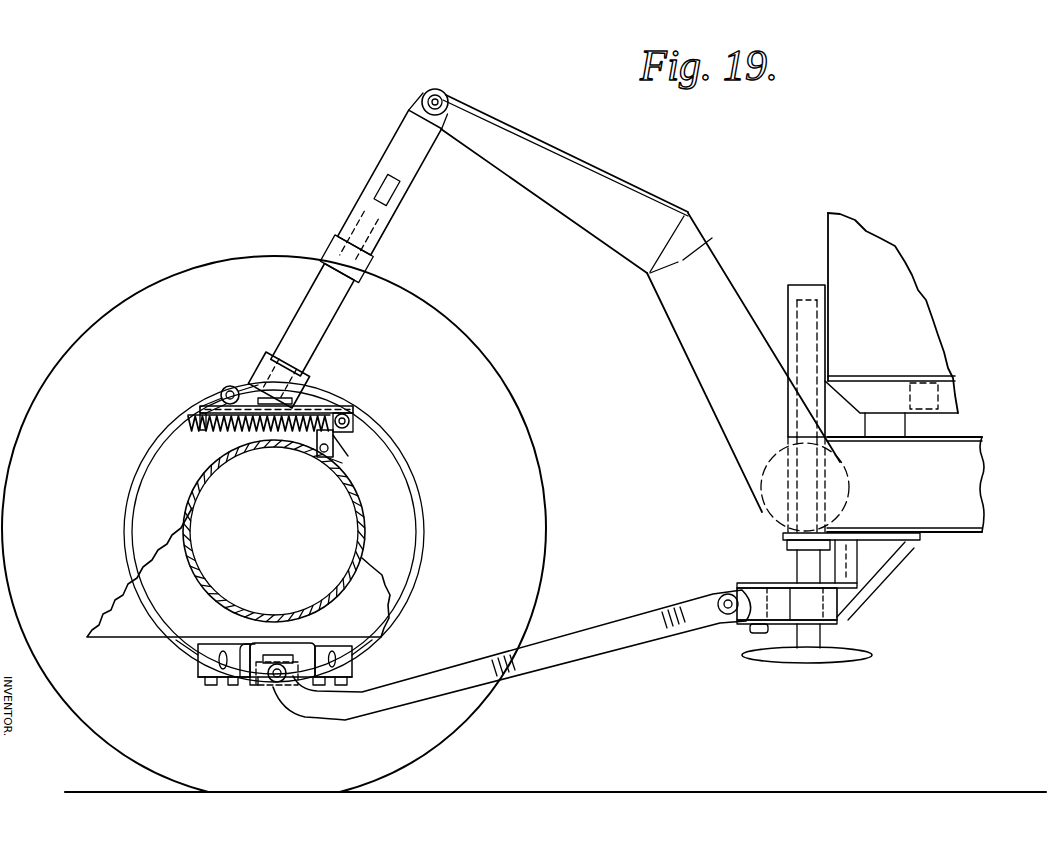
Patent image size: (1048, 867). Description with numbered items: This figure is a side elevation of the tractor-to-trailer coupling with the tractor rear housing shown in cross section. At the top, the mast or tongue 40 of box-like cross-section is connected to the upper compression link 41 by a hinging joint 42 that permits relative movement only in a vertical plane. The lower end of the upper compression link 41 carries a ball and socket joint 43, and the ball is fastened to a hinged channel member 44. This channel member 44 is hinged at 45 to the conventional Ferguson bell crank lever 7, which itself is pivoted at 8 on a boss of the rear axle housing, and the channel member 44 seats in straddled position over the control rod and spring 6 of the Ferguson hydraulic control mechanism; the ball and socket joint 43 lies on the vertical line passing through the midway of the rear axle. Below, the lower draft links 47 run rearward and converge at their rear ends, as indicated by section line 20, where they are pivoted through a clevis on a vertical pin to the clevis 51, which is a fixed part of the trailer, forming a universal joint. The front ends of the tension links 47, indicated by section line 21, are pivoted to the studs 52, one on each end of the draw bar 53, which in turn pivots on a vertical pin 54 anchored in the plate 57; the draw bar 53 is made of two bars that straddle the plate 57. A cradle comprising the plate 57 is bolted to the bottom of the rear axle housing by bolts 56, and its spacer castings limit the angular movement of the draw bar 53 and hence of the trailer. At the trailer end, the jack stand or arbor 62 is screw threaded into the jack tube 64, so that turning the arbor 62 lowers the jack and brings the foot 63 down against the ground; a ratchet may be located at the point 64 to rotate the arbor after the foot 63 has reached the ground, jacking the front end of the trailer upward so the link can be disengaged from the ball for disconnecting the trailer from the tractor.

The spring 6 is at (198, 414).
The bell crank lever 7 is at (337, 441).
The pivot 8 is at (329, 452).
The section line 20- 20 is at (823, 405).
The section line 21- 21 is at (278, 702).
The mast or tongue 40 is at (620, 197).
The upper compression link 41 is at (345, 281).
The hinging joint 42 is at (448, 100).
The ball and socket joint 43 is at (302, 368).
The hinged channel member 44 is at (322, 403).
The hinge 45 is at (350, 420).
The lower draft links 47 is at (618, 640).
The clevis 51 is at (781, 622).
The studs 52 is at (276, 679).
The draw bar 53 is at (257, 640).
The vertical pin 54 is at (283, 654).
The bolts 56 is at (210, 686).
The plate 57 is at (250, 686).
The jack stand or arbor 62 is at (820, 642).
The foot 63 is at (788, 287).
The jack tube 64 is at (797, 567).